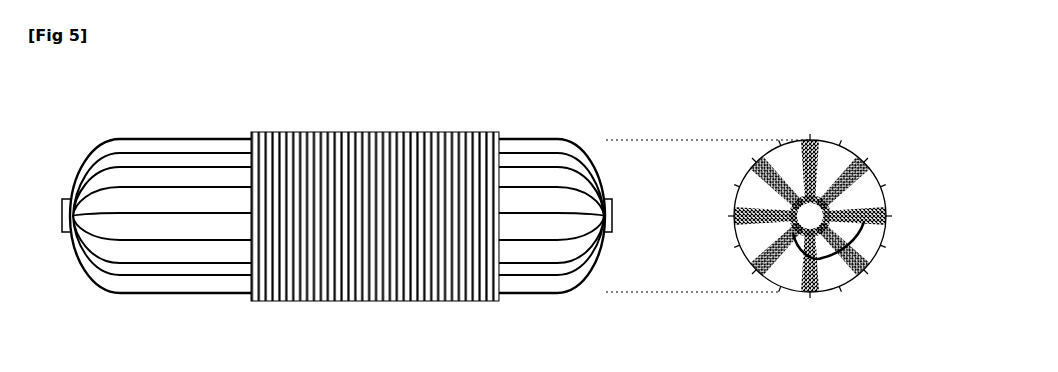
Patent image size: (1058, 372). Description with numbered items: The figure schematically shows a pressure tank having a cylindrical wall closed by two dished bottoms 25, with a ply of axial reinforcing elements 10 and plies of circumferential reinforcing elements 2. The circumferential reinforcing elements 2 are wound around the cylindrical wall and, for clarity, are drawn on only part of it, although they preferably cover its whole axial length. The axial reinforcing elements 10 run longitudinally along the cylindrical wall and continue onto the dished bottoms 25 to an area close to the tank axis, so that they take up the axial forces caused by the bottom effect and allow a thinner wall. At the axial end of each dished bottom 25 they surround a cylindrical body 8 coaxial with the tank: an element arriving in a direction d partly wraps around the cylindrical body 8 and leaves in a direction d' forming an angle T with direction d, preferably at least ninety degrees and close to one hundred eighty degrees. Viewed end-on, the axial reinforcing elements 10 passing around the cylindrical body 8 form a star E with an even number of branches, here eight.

The circumferential reinforcing elements 2 is at (284, 125).
The axial reinforcing elements 10 is at (202, 143).
The dished bottoms 25 is at (85, 144).
The cylindrical body 8 is at (800, 193).
The star E is at (810, 190).
The direction d is at (794, 189).
The direction d' is at (773, 211).
The angle T is at (828, 251).